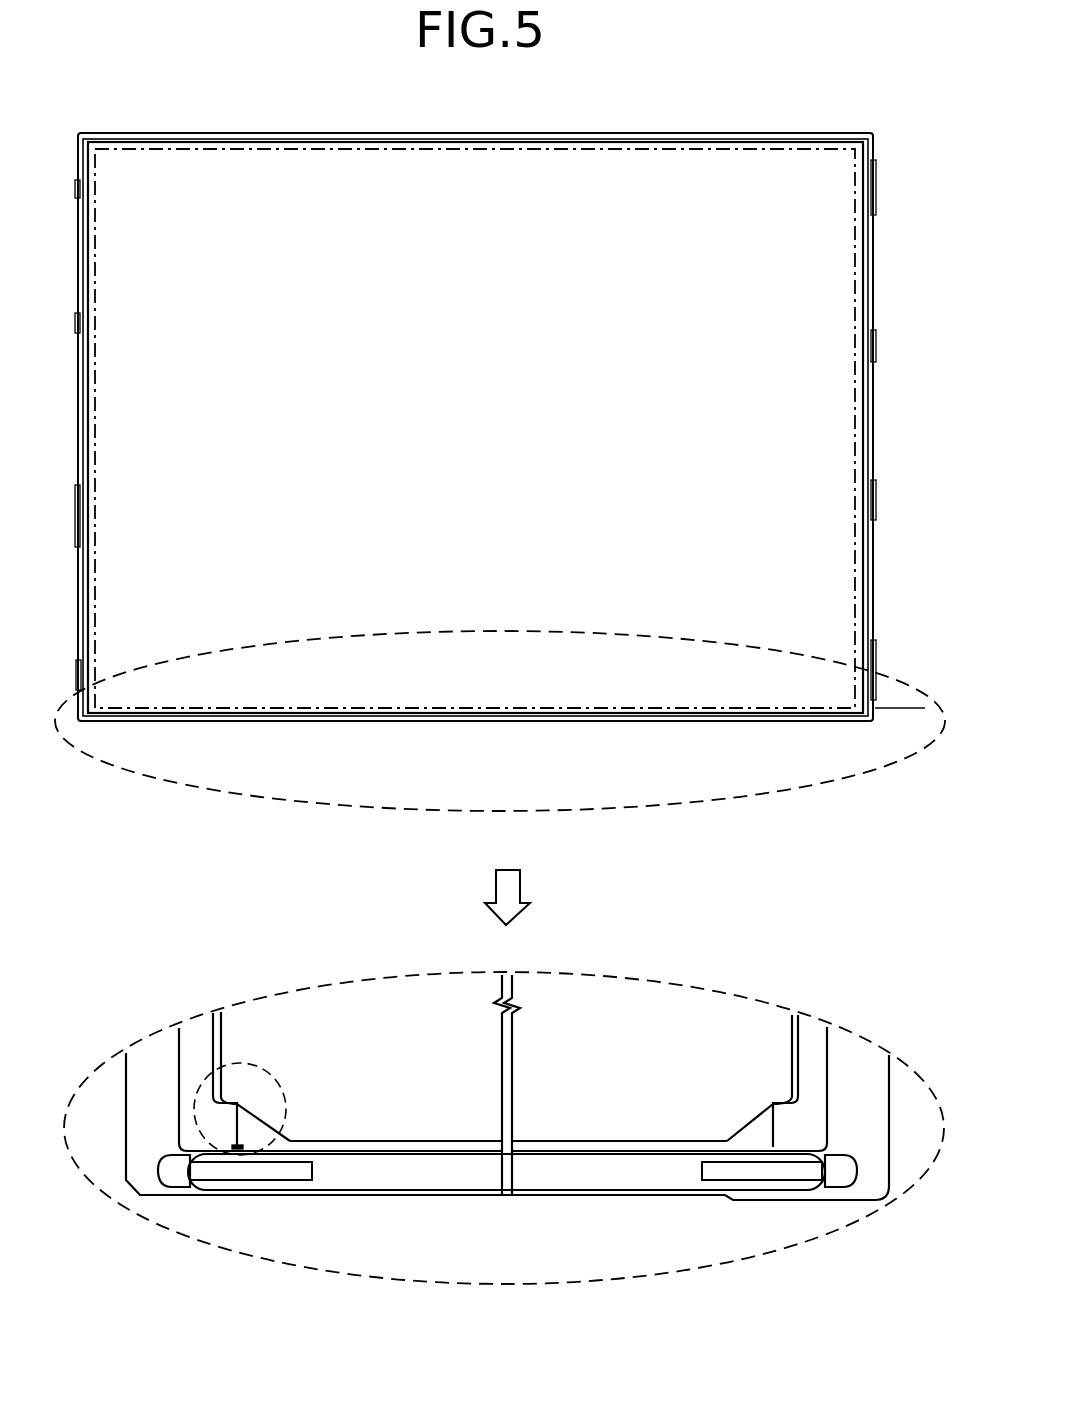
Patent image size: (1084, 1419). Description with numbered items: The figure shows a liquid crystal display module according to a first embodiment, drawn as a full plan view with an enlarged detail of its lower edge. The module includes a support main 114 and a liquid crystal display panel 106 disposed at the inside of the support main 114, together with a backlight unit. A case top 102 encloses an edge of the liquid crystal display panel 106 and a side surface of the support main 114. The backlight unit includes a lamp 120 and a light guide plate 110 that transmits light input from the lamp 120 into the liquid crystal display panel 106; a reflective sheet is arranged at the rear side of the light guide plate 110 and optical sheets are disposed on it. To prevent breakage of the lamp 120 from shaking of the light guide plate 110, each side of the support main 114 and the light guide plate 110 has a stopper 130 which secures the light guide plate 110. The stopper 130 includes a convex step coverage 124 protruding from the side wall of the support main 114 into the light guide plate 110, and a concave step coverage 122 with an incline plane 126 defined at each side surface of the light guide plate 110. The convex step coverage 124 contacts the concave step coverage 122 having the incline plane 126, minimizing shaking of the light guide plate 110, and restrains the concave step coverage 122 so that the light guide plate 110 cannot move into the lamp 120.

The case top 102 is at (870, 418).
The liquid crystal display panel 106 is at (760, 160).
The light guide plate 110 is at (442, 1133).
The support main 114 is at (763, 722).
The lamp 120 is at (352, 1190).
The concave step coverage 122 is at (224, 1085).
The convex step coverage 124 is at (232, 1147).
The incline plane 126 is at (267, 1118).
The stopper 130 is at (205, 1087).